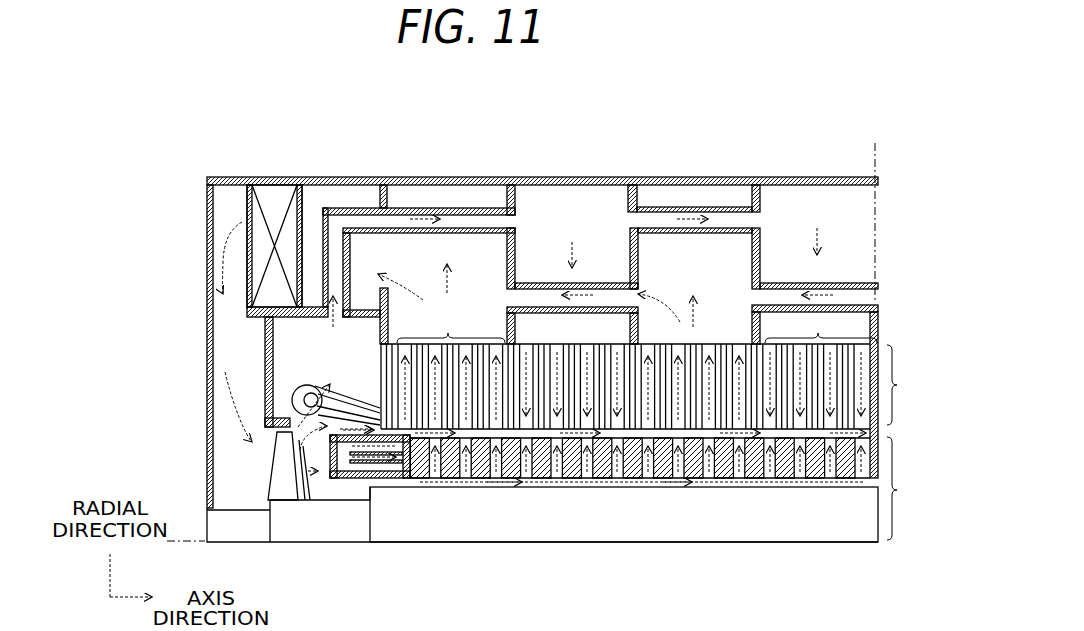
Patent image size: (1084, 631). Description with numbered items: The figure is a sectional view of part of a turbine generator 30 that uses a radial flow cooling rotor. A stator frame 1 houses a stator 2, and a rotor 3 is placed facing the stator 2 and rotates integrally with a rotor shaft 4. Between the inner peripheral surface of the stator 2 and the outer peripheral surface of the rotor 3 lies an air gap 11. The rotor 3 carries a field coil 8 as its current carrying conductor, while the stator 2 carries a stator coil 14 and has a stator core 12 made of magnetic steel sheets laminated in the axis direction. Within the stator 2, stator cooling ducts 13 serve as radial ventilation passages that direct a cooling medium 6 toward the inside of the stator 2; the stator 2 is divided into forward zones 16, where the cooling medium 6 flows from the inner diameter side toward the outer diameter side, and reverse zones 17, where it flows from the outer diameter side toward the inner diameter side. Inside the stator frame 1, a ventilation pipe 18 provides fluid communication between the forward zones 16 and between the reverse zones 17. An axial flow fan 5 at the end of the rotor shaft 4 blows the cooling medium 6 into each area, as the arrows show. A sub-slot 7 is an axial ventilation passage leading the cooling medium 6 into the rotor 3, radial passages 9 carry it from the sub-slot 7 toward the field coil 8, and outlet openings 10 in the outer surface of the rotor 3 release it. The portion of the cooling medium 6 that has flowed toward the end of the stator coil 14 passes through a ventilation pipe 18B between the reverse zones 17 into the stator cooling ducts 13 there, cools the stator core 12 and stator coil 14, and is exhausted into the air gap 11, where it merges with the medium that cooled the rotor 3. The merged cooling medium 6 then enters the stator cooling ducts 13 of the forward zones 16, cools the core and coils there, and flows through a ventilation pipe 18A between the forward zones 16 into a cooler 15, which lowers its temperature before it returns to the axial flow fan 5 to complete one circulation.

The stator frame 1 is at (357, 180).
The stator 2 is at (645, 386).
The rotor 3 is at (660, 488).
The rotor shaft 4 is at (418, 534).
The axial flow fan 5 is at (278, 473).
The cooling medium 6 is at (305, 500).
The sub-slot 7 is at (600, 480).
The field coil 8 is at (657, 478).
The radial passage 9 is at (707, 478).
The outlet opening 10 is at (767, 443).
The air gap 11 is at (870, 433).
The stator core 12 is at (378, 360).
The stator cooling duct 13 is at (375, 390).
The stator coil 14 is at (305, 382).
The cooler 15 is at (276, 192).
The forward zone 16 is at (517, 286).
The reverse zone 17 is at (815, 391).
The ventilation pipe 18 is at (717, 207).
The ventilation pipe between forward zones 18A is at (853, 295).
The ventilation pipe between reverse zones 18B is at (374, 218).
The turbine generator 30 is at (559, 124).